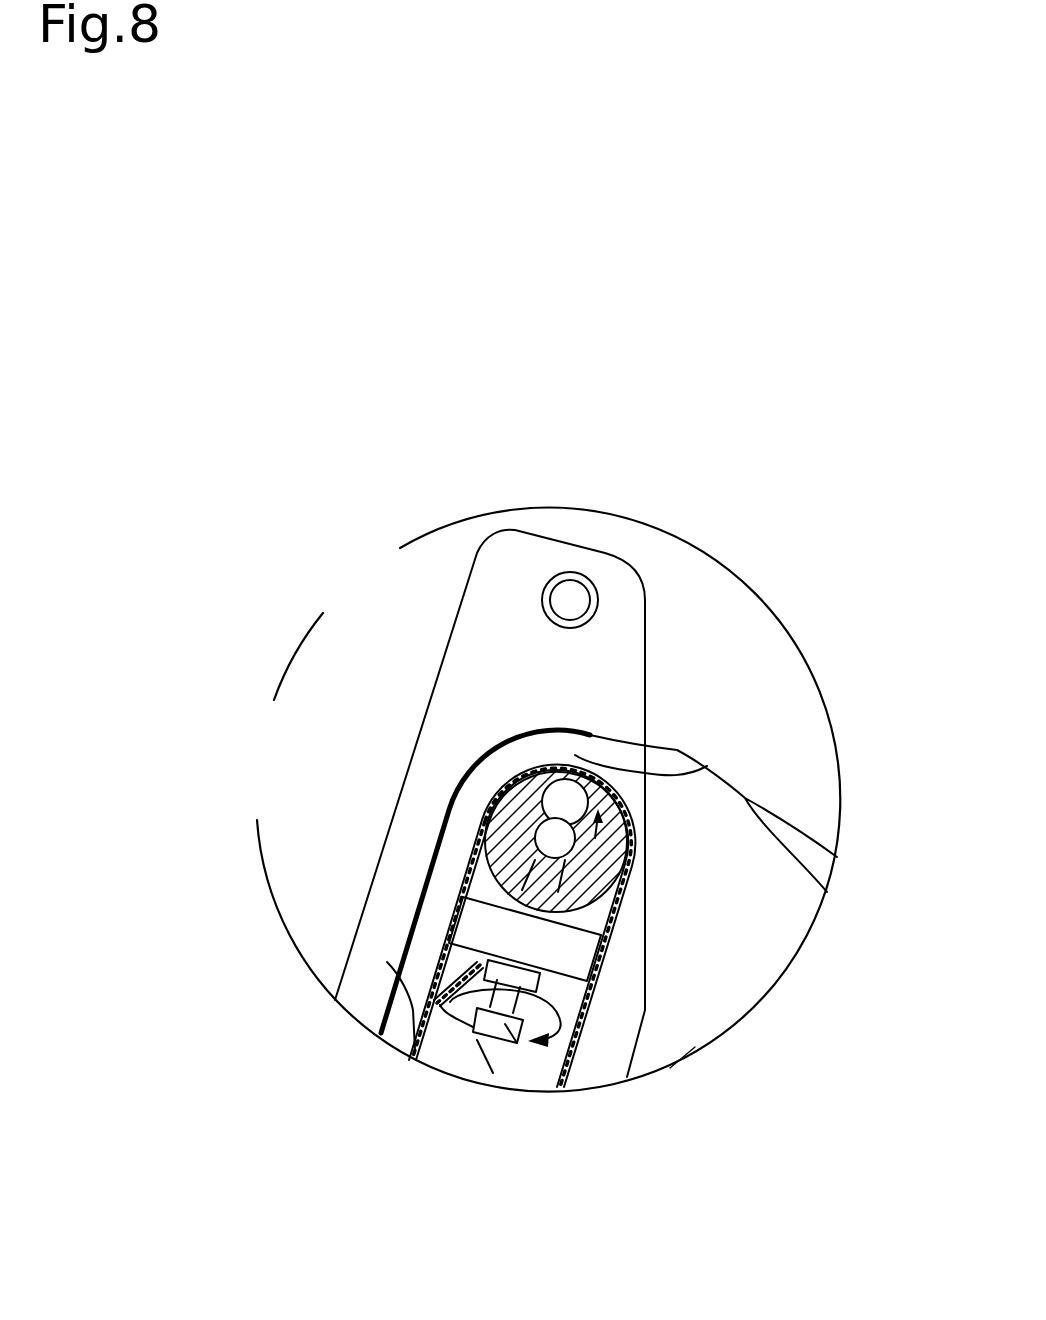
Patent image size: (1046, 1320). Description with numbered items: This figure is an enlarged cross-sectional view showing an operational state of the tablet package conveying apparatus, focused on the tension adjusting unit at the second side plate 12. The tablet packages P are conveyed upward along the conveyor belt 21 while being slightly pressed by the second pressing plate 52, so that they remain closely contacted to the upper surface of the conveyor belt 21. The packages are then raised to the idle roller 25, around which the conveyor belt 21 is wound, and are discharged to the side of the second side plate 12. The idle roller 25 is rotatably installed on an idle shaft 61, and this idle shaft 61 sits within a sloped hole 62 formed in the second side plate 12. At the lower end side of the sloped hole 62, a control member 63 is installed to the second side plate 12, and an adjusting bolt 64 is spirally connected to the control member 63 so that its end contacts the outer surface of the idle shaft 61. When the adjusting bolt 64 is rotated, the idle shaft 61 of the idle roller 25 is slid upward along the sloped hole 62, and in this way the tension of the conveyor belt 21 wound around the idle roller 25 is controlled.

The second side plate 12 is at (453, 627).
The sloped hole 62 is at (540, 820).
The tablet package P is at (677, 760).
The control member 63 is at (570, 950).
The idle roller 25 is at (610, 846).
The idle shaft 61 is at (553, 843).
The adjusting bolt 64 is at (520, 1043).
The conveyor belt 21 is at (377, 1037).
The second pressing plate 52 is at (387, 962).